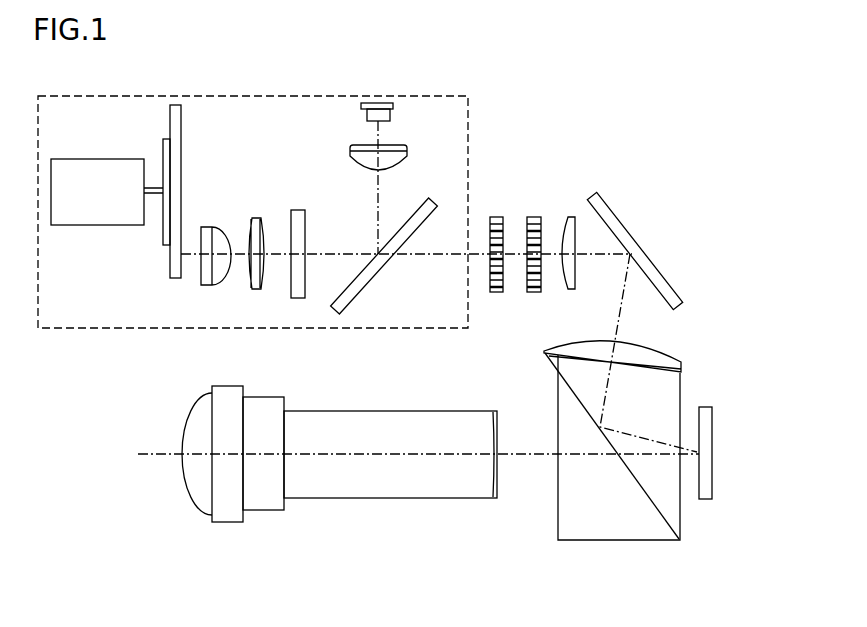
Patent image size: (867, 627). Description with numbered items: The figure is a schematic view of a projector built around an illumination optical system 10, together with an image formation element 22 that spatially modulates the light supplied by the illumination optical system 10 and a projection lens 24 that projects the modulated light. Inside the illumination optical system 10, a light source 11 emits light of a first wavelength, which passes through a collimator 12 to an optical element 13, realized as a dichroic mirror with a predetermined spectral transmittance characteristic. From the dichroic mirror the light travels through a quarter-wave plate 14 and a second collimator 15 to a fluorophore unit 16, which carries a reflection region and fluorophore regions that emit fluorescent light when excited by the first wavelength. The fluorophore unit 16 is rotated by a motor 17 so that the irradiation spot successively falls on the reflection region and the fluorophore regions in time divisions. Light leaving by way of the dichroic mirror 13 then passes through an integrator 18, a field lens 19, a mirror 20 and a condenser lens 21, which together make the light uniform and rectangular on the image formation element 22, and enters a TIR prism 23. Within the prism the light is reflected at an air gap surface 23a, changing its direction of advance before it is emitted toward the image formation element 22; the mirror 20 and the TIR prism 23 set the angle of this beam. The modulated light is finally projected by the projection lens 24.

The illumination optical system 10 is at (248, 96).
The light source 11 is at (390, 116).
The collimator 12 is at (407, 161).
The optical element 13 is at (355, 293).
The quarter-wave plate 14 is at (296, 212).
The collimator 15 is at (267, 218).
The fluorophore unit 16 is at (175, 113).
The motor 17 is at (91, 205).
The integrator 18 is at (543, 212).
The field lens 19 is at (568, 220).
The mirror 20 is at (605, 210).
The condenser lens 21 is at (673, 365).
The image formation element 22 is at (710, 488).
The TIR prism 23 is at (600, 525).
The air gap surface 23a is at (640, 478).
The projection lens 24 is at (373, 488).